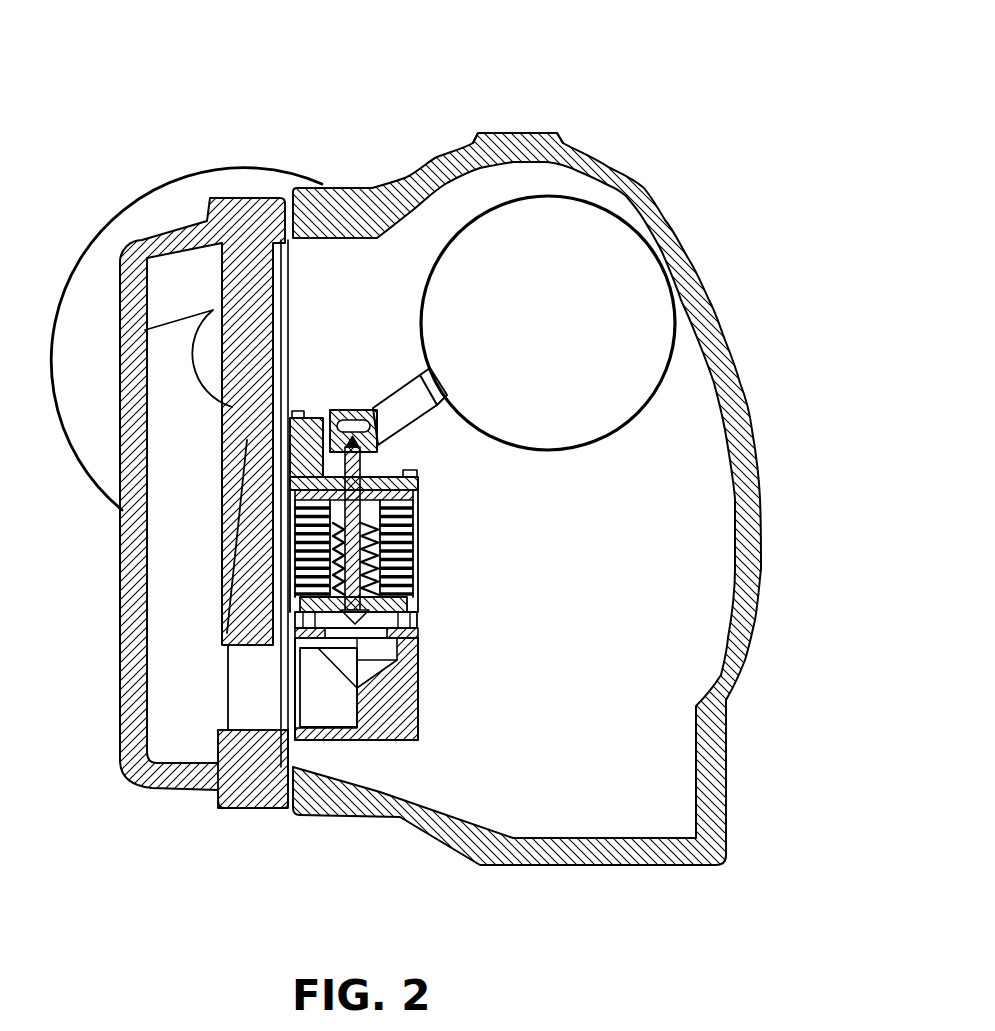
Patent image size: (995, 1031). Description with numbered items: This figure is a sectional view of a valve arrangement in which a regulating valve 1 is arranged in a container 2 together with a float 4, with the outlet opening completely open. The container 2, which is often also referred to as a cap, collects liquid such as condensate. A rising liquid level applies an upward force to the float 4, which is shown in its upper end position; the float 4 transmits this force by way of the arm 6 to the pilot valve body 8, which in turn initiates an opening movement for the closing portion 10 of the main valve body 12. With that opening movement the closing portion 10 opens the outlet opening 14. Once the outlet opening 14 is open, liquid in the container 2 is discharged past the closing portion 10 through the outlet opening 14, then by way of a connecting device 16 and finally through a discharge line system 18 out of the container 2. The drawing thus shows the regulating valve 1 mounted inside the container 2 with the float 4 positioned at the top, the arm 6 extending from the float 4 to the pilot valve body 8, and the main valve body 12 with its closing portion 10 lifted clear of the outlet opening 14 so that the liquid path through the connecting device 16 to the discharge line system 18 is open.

The regulating valve 1 is at (627, 526).
The container 2 is at (455, 145).
The float 4 is at (548, 323).
The arm 6 is at (401, 398).
The pilot valve body 8 is at (360, 460).
The closing portion 10 is at (367, 640).
The main valve body 12 is at (428, 519).
The outlet opening 14 is at (377, 690).
The connecting device 16 is at (278, 700).
The discharge line system 18 is at (163, 660).